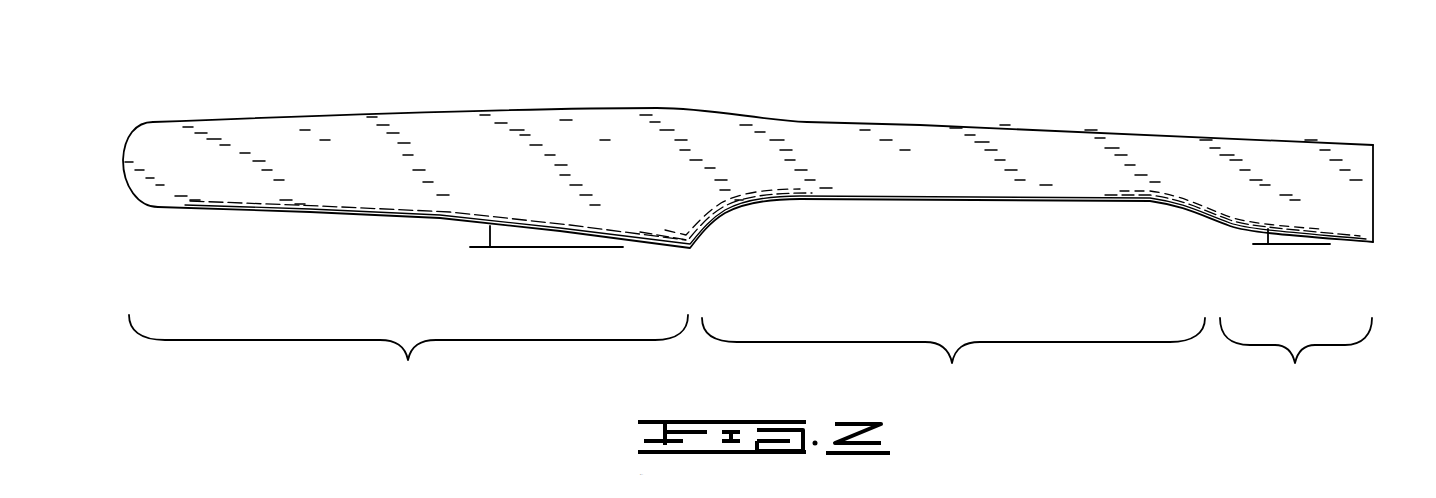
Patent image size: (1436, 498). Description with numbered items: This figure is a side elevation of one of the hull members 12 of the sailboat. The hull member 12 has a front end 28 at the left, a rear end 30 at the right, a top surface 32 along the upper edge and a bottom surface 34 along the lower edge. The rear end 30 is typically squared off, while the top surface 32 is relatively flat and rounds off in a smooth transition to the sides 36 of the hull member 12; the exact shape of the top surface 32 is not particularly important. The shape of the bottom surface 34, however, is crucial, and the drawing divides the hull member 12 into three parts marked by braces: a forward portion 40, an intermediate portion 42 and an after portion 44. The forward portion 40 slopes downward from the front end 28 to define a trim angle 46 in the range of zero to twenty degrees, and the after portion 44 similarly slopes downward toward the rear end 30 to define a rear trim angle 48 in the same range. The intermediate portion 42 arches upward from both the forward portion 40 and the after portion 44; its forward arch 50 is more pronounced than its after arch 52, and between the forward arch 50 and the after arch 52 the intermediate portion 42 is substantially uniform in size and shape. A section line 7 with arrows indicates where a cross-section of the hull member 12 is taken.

The section line 7- 7 is at (800, 103).
The hull member 12 is at (352, 60).
The front end 28 is at (123, 143).
The rear end 30 is at (1376, 173).
The top surface 32 is at (976, 124).
The bottom surface 34 is at (899, 204).
The side 36 is at (473, 163).
The forward portion 40 is at (408, 354).
The intermediate portion 42 is at (953, 357).
The after portion 44 is at (1296, 357).
The trim angle 46 is at (488, 234).
The rear trim angle 48 is at (1258, 236).
The forward arch 50 is at (715, 219).
The after arch 52 is at (1190, 210).